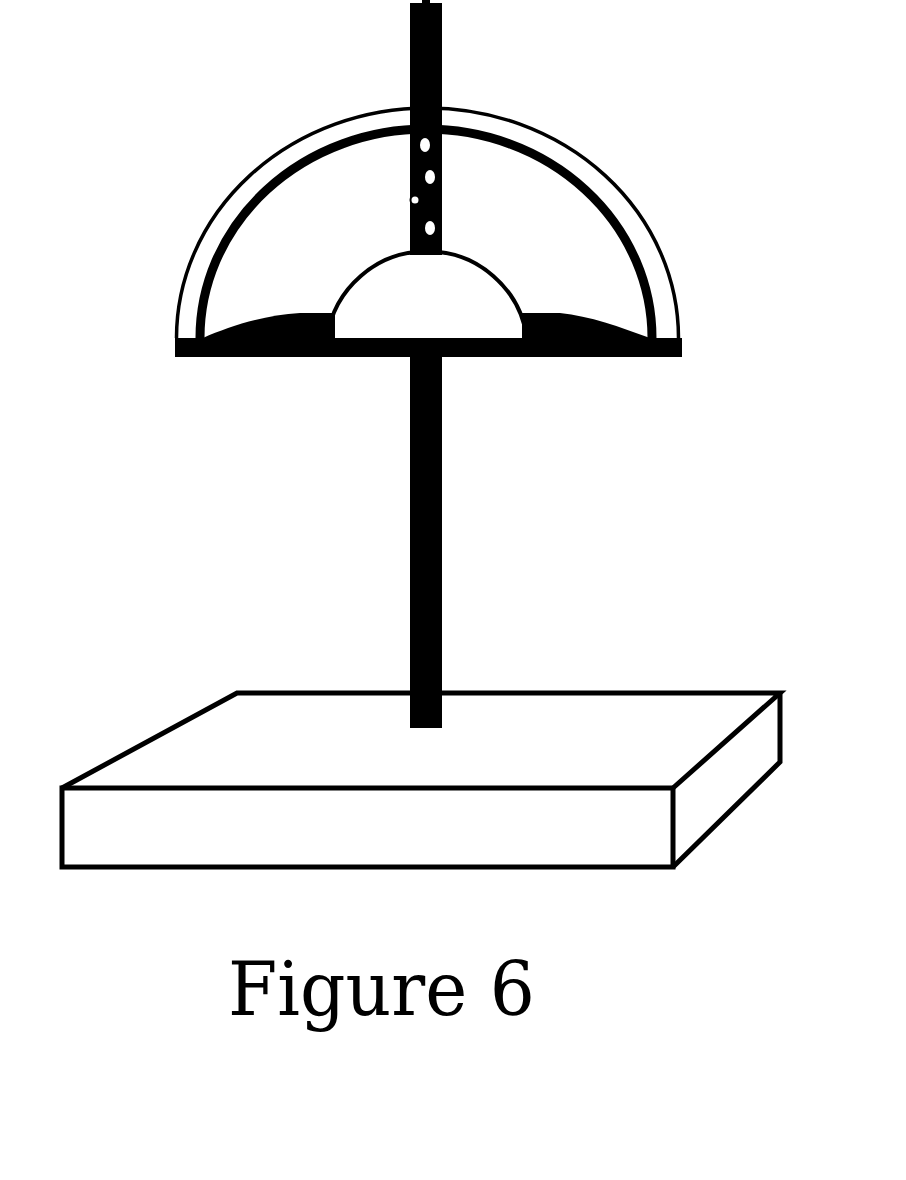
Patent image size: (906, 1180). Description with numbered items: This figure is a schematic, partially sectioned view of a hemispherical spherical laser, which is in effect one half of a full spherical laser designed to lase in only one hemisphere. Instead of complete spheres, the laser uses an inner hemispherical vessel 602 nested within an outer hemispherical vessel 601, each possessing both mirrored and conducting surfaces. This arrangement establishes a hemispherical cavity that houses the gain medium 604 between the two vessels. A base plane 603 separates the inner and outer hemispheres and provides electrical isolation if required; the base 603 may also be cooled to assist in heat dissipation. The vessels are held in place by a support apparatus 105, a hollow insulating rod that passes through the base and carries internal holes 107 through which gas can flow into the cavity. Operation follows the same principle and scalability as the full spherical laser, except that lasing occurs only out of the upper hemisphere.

The support apparatus 105 is at (410, 493).
The internal holes 107 is at (413, 199).
The outer hemispherical vessel 601 is at (565, 168).
The inner hemispherical vessel 602 is at (342, 292).
The base plane 603 is at (245, 356).
The gain medium 604 is at (525, 242).